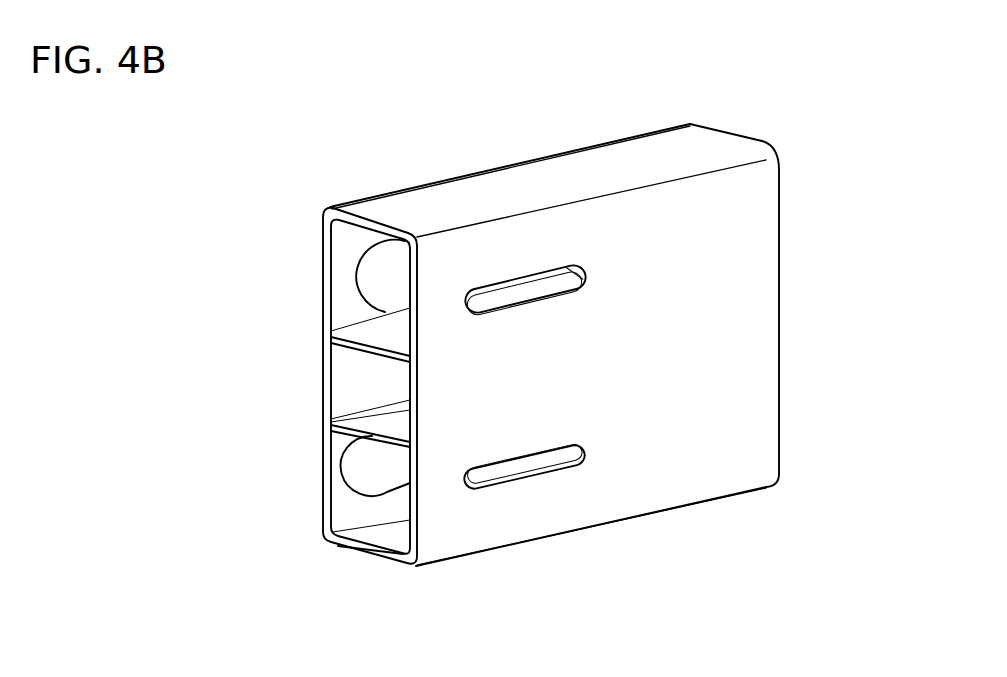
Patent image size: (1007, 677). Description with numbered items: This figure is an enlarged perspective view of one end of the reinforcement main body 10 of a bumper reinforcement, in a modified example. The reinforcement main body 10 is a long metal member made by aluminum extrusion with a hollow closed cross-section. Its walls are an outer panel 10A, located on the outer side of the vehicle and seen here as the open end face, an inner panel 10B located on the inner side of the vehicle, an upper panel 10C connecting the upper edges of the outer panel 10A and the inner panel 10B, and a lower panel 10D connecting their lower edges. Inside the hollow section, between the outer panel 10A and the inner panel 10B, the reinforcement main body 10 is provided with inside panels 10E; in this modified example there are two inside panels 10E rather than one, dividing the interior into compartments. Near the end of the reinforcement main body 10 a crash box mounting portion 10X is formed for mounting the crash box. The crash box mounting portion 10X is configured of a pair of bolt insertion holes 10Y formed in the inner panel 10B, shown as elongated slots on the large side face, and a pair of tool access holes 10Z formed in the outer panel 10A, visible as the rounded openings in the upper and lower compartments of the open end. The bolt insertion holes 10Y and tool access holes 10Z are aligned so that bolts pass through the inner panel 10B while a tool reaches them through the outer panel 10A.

The reinforcement main body 10 is at (763, 305).
The outer panel 10A is at (338, 377).
The inner panel 10B is at (671, 478).
The upper panel 10C is at (620, 152).
The lower panel 10D is at (377, 537).
The inside panel 10E is at (357, 330).
The crash box mounting portion 10X is at (512, 117).
The bolt insertion hole 10Y is at (512, 272).
The tool access hole 10Z is at (388, 265).